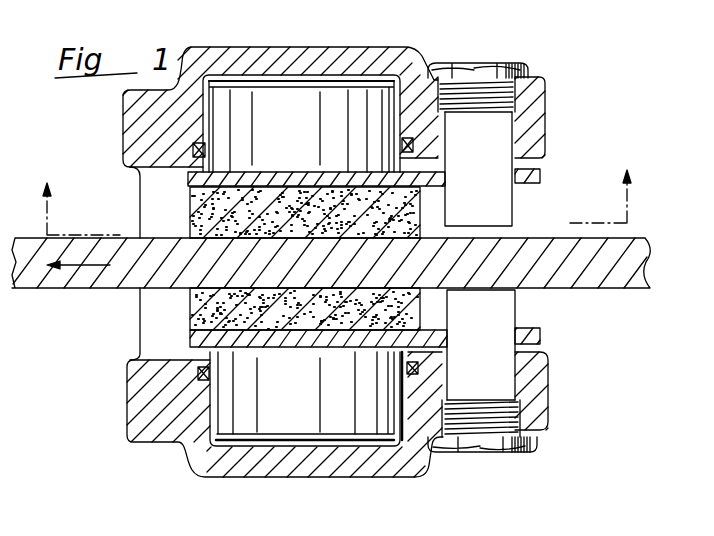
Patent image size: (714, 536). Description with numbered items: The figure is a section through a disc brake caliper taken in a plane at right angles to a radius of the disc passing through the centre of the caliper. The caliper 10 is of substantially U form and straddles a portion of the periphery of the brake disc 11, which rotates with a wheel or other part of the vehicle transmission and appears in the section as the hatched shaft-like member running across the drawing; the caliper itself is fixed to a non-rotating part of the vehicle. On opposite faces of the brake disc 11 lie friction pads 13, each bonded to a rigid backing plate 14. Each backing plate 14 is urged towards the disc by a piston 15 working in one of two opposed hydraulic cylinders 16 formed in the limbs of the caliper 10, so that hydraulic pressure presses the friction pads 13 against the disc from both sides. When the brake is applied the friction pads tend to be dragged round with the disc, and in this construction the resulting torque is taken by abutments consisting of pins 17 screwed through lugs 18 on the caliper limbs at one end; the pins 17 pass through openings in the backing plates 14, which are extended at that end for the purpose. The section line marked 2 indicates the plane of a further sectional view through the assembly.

The section line 2- 2 is at (333, 202).
The caliper 10 is at (137, 106).
The brake disc 11 is at (622, 258).
The friction pads 13 is at (208, 215).
The backing plates 14 is at (190, 180).
The pistons 15 is at (327, 107).
The hydraulic cylinders 16 is at (293, 97).
The pins 17 is at (493, 118).
The lugs 18 is at (532, 147).